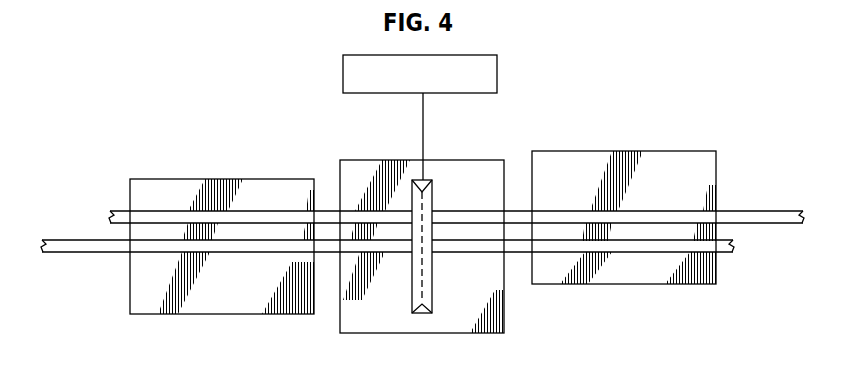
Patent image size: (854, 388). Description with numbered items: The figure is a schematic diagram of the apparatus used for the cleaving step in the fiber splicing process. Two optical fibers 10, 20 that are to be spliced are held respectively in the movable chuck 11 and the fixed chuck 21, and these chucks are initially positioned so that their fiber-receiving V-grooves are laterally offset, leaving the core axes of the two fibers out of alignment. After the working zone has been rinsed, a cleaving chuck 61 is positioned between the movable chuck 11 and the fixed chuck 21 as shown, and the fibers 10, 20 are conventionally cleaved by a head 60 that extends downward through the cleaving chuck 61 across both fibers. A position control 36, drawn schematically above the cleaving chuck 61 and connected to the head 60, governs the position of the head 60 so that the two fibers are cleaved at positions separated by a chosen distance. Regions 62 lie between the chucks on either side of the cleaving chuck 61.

The optical fiber 10 is at (80, 240).
The movable chuck 11 is at (178, 179).
The optical fiber 20 is at (758, 211).
The fixed chuck 21 is at (582, 151).
The control 36 is at (497, 72).
The head 60 is at (424, 204).
The cleaving chuck 61 is at (378, 160).
The gap between yokes 62 is at (330, 211).